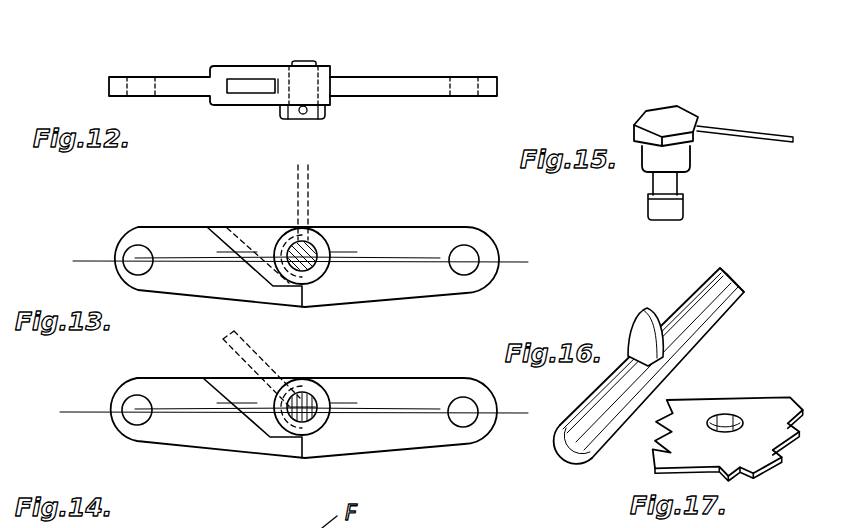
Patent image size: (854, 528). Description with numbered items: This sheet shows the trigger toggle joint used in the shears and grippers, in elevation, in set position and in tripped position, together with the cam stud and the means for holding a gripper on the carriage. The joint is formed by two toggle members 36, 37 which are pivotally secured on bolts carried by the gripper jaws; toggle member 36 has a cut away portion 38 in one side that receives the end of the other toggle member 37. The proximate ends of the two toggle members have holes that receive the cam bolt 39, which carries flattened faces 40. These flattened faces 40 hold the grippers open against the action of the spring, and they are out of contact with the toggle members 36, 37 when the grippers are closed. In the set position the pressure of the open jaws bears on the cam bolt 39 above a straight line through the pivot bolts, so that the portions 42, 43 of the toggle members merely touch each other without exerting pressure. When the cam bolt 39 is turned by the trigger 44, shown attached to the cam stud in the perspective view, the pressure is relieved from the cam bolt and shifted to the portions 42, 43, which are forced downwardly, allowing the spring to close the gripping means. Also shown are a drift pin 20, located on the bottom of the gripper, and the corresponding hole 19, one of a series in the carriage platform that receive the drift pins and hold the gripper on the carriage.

In FIG. 12, the toggle member 36 is at (185, 85).
In FIG. 12, the toggle member 37 is at (385, 95).
In FIG. 12, the cut away portion 38 is at (253, 83).
In FIG. 14, the cut away portion 38 is at (265, 405).
In FIG. 12, the cam bolt 39 is at (306, 63).
In FIG. 15, the cam bolt 39 is at (680, 155).
In FIG. 15, the flattened faces 40 is at (653, 179).
In FIG. 13, the portion 42 is at (280, 292).
In FIG. 14, the portion 42 is at (283, 447).
In FIG. 13, the portion 43 is at (317, 292).
In FIG. 14, the portion 43 is at (323, 448).
In FIG. 13, the trigger 44 is at (306, 203).
In FIG. 14, the trigger 44 is at (261, 368).
In FIG. 16, the drift pin 20 is at (643, 332).
In FIG. 17, the hole 19 is at (730, 414).